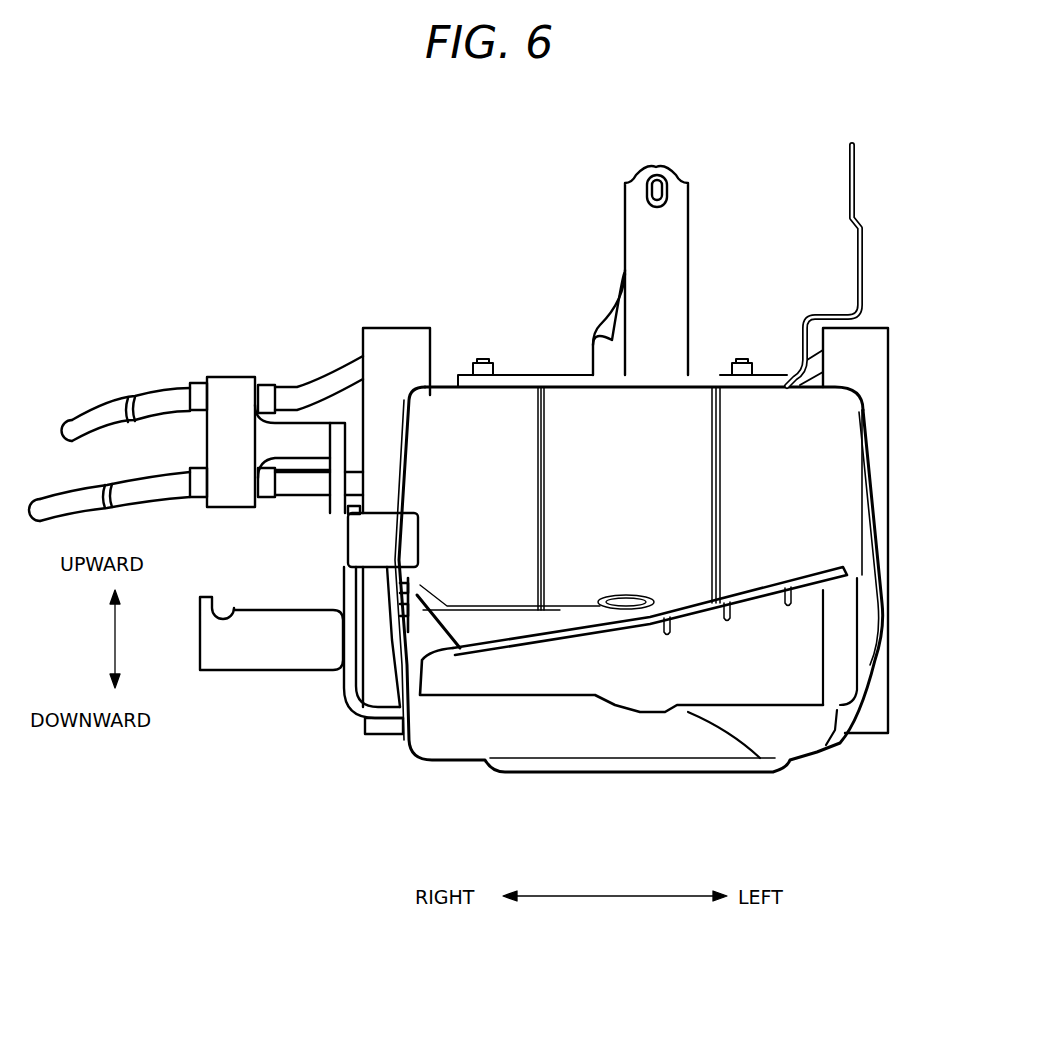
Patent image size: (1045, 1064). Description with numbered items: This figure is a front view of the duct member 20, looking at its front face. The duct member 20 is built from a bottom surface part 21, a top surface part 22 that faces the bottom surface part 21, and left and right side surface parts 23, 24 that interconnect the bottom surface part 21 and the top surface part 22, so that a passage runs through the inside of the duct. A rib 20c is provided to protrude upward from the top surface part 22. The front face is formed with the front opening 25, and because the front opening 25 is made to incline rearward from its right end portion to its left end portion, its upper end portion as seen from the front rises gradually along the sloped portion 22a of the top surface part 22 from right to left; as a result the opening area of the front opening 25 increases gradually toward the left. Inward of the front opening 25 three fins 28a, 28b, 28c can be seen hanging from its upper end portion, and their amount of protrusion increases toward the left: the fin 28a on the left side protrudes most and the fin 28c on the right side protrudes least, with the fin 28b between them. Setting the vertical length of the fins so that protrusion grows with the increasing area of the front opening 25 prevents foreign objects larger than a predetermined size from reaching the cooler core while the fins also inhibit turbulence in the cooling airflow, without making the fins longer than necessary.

The duct member 20 is at (461, 425).
The top surface part 22 is at (580, 428).
The rib 20c is at (722, 478).
The sloped portion 22a is at (528, 622).
The fin 28a is at (788, 590).
The fin 28b is at (728, 603).
The fin 28c is at (668, 612).
The left side surface part 23 is at (883, 623).
The right side surface part 24 is at (398, 600).
The front opening 25 is at (780, 672).
The bottom surface part 21 is at (737, 774).